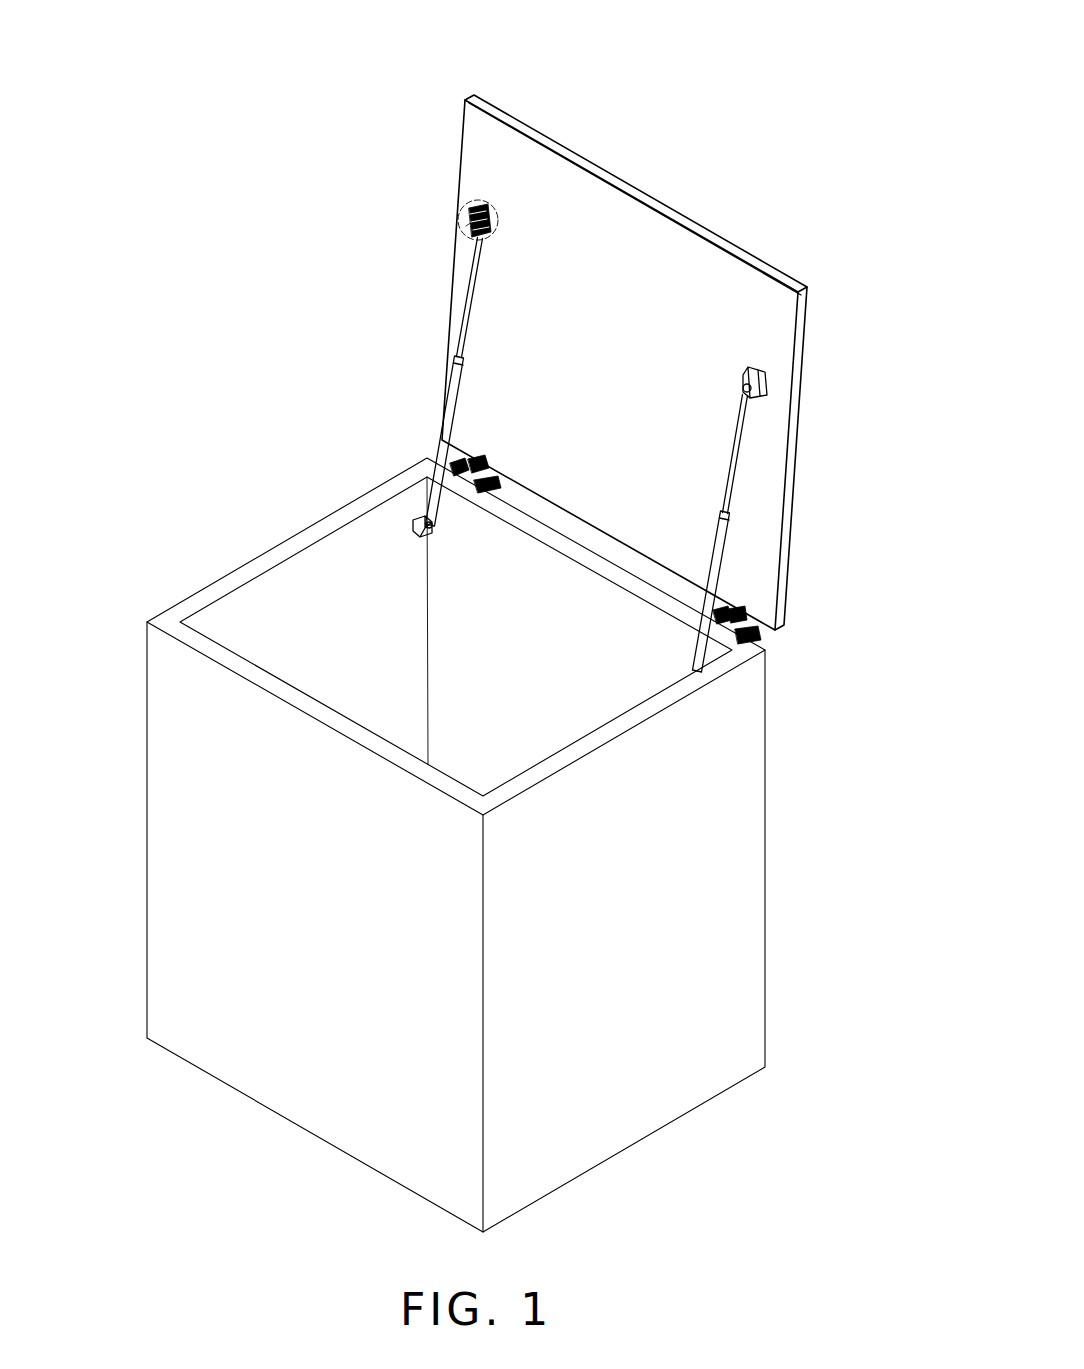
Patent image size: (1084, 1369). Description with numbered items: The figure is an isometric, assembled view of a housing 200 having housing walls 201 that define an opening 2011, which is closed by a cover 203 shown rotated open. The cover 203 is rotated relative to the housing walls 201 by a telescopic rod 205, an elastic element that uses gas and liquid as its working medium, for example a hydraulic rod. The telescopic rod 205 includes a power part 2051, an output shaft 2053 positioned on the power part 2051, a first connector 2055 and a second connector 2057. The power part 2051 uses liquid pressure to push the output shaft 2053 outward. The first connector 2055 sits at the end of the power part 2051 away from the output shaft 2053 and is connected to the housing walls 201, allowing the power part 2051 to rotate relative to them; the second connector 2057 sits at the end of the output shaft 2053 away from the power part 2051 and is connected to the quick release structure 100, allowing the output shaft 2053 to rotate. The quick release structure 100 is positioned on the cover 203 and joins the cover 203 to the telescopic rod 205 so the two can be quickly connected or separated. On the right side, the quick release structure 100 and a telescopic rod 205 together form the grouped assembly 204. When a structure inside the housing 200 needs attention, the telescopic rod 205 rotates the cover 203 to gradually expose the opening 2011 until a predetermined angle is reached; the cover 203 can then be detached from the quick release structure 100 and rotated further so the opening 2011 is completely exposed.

The housing 200 is at (580, 62).
The housing walls 201 is at (168, 732).
The opening 2011 is at (262, 618).
The cover 203 is at (642, 232).
The support assembly 204 is at (868, 503).
The telescopic rod 205 is at (316, 360).
The power part 2051 is at (437, 498).
The output shaft 2053 is at (453, 345).
The first connector 2055 is at (412, 522).
The second connector 2057 is at (478, 243).
The quick release structure 100 is at (761, 395).